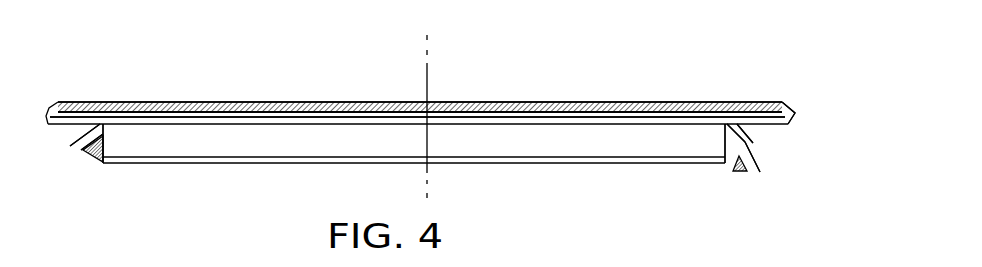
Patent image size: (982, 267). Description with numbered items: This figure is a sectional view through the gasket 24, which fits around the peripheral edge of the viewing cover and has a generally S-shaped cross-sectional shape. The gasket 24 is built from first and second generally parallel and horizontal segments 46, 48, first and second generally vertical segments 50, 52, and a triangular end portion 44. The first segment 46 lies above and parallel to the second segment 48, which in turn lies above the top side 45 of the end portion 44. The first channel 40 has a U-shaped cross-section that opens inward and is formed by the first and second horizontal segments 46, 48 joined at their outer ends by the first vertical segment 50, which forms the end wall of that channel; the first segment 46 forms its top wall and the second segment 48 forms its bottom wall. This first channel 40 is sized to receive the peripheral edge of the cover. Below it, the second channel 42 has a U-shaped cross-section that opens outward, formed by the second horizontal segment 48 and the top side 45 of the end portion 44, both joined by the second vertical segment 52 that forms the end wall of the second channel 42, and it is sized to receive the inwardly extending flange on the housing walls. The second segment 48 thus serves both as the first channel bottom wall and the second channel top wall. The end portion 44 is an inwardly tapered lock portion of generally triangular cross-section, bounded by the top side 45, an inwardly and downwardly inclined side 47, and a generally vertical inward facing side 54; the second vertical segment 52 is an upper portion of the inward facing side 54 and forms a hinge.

The gasket 24 is at (622, 168).
The first channel 40 is at (130, 103).
The second channel 42 is at (73, 136).
The end portion 44 is at (740, 167).
The top side 45 is at (742, 133).
The first segment 46 is at (66, 117).
The inwardly and downwardly inclined side 47 is at (747, 147).
The second segment 48 is at (78, 118).
The first vertical segment 50 is at (787, 121).
The second vertical segment 52 is at (100, 127).
The inward facing side 54 is at (98, 152).